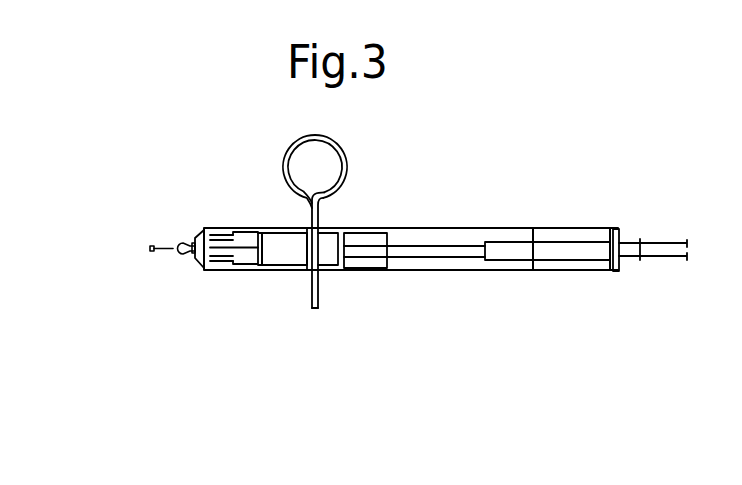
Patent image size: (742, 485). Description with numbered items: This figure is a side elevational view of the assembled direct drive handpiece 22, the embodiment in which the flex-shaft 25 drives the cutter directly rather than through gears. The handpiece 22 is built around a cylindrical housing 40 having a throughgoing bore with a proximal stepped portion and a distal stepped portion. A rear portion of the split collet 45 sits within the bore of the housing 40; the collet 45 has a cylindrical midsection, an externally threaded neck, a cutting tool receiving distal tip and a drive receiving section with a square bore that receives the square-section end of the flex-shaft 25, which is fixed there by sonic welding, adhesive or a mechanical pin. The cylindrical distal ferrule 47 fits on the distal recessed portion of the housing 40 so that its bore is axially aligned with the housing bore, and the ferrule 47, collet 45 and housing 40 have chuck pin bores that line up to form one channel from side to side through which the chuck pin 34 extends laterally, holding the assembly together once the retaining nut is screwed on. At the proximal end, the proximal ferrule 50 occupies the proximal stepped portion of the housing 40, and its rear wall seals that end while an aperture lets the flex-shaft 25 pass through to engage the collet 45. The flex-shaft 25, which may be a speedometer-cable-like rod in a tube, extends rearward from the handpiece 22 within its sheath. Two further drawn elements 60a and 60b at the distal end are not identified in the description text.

The direct drive handpiece 22 is at (534, 298).
The flex-shaft 25 is at (445, 249).
The chuck pin 34 is at (347, 156).
The cylindrical housing 40 is at (446, 228).
The split collet 45 is at (277, 256).
The distal ferrule 47 is at (272, 234).
The proximal ferrule 50 is at (597, 228).
The inner needle 60a is at (224, 252).
The needle tip 60b is at (163, 249).